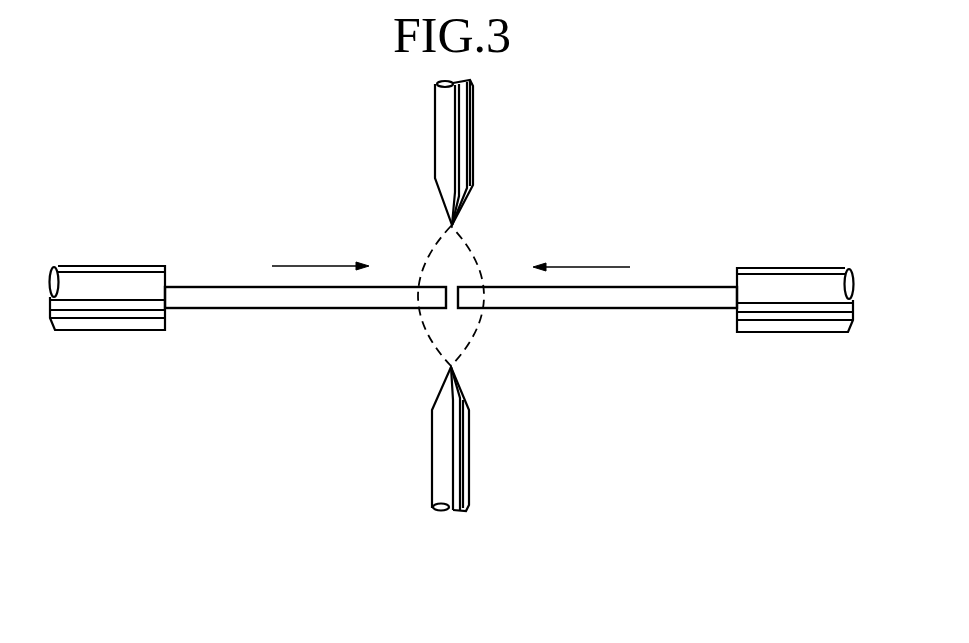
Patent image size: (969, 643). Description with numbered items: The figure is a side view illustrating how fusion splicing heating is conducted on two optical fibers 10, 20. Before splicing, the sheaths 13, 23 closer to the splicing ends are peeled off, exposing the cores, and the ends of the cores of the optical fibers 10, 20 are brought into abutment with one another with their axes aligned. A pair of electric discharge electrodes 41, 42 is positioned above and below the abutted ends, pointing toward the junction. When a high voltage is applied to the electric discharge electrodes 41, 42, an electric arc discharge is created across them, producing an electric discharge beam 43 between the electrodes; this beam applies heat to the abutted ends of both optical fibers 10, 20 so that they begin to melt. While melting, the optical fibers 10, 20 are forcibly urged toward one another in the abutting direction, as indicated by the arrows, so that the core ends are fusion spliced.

The optical fiber 10 is at (288, 300).
The sheath 13 is at (83, 318).
The optical fiber 20 is at (617, 300).
The sheath 23 is at (797, 320).
The electric discharge electrode 41 is at (474, 130).
The electric discharge electrode 42 is at (469, 441).
The electric discharge beam 43 is at (480, 240).